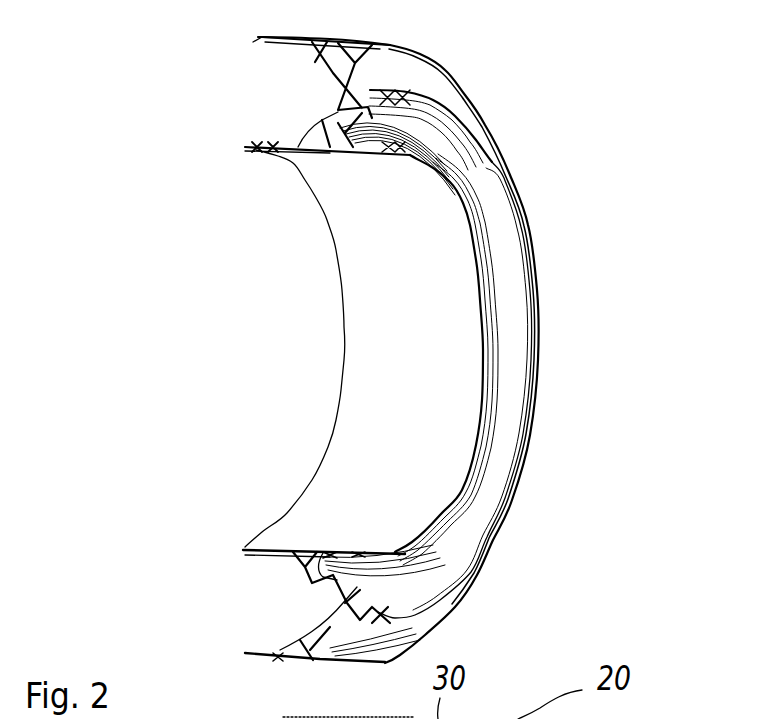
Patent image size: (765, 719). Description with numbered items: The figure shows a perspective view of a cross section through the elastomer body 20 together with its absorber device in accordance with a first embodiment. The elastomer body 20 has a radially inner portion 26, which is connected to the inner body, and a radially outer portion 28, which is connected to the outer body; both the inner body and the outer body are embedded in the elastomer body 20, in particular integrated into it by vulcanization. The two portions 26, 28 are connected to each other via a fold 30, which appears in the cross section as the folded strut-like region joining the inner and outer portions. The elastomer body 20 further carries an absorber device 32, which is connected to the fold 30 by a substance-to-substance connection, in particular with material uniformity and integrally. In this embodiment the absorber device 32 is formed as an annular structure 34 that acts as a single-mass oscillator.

The elastomer body 20 is at (566, 83).
The radially inner portion 26 is at (256, 148).
The radially outer portion 28 is at (258, 40).
The fold 30 is at (405, 60).
The absorber device 32 is at (547, 222).
The annular structure 34 is at (520, 312).